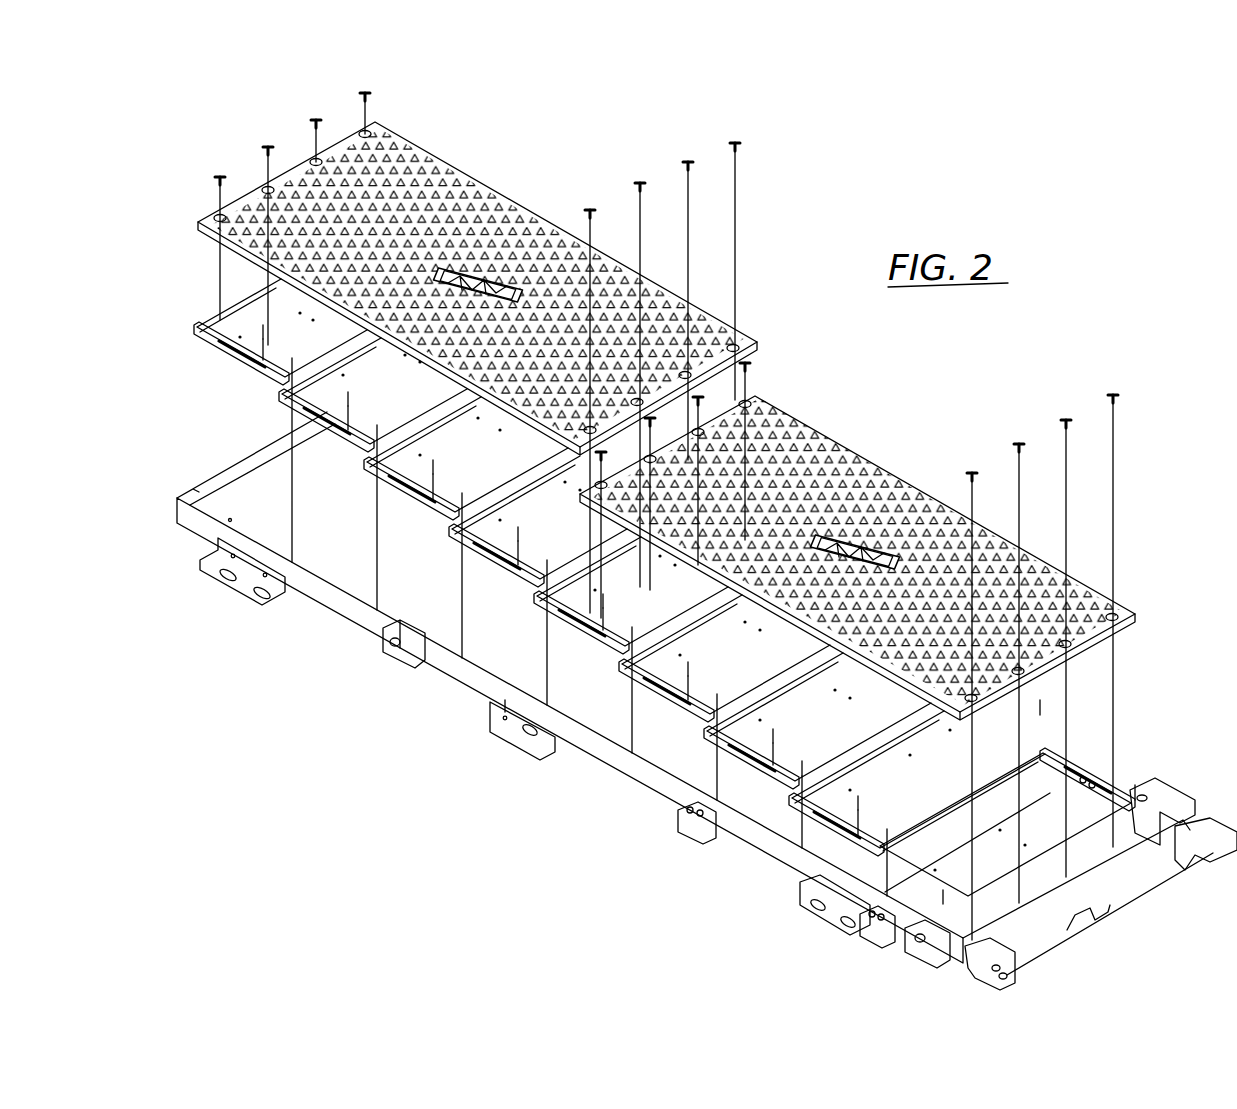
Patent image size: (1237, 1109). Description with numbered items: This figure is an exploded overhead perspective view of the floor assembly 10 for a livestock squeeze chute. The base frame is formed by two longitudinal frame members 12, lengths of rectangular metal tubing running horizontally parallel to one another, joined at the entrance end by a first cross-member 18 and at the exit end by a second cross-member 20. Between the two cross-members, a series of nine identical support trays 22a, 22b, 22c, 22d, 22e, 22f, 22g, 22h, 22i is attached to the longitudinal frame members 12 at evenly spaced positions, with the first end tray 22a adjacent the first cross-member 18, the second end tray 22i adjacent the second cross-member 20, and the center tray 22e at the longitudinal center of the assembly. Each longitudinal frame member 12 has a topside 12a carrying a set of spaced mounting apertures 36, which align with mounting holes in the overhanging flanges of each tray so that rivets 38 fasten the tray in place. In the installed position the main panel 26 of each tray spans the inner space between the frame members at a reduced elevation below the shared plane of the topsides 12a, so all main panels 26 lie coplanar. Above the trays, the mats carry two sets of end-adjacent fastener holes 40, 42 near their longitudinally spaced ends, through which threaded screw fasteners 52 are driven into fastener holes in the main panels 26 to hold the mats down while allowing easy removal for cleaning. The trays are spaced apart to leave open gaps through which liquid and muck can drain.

The floor assembly 10 is at (1066, 335).
The longitudinal frame members 12 is at (695, 693).
The topside 12a is at (308, 574).
The first cross-member 18 is at (243, 466).
The second cross-member 20 is at (1130, 885).
The first end tray 22a is at (240, 370).
The support tray 22b is at (352, 455).
The support tray 22c is at (422, 505).
The support tray 22d is at (490, 569).
The center tray 22e is at (580, 637).
The support tray 22f is at (657, 701).
The support tray 22g is at (754, 767).
The support tray 22h is at (825, 832).
The second end tray 22i is at (962, 870).
The main panel 26 is at (1007, 864).
The mounting apertures 36 is at (255, 560).
The rivets 38 is at (1042, 698).
The end-adjacent fastener holes 40 is at (217, 215).
The end-adjacent fastener holes 42 is at (639, 400).
The threaded screw fasteners 52 is at (220, 176).